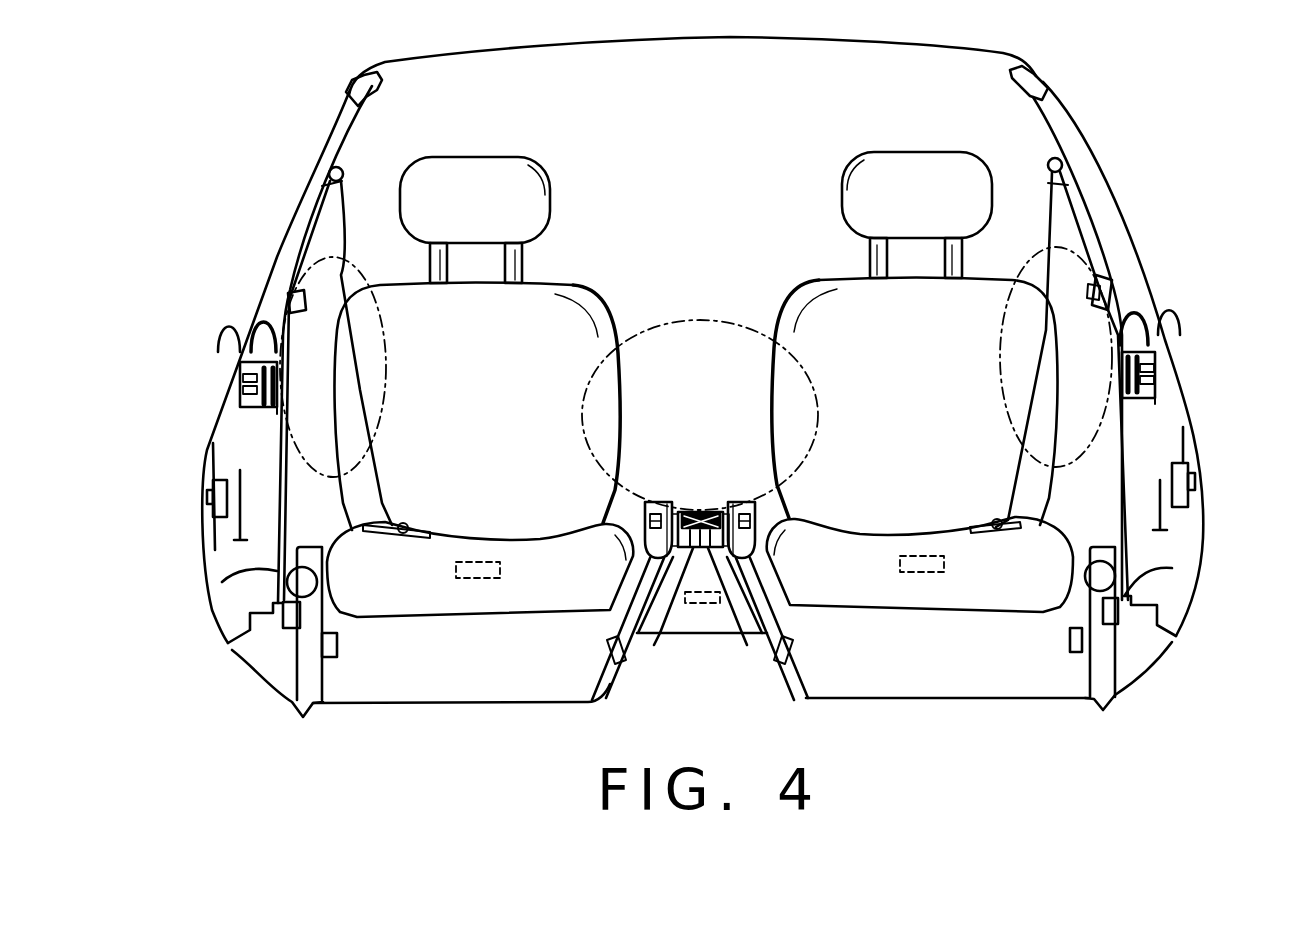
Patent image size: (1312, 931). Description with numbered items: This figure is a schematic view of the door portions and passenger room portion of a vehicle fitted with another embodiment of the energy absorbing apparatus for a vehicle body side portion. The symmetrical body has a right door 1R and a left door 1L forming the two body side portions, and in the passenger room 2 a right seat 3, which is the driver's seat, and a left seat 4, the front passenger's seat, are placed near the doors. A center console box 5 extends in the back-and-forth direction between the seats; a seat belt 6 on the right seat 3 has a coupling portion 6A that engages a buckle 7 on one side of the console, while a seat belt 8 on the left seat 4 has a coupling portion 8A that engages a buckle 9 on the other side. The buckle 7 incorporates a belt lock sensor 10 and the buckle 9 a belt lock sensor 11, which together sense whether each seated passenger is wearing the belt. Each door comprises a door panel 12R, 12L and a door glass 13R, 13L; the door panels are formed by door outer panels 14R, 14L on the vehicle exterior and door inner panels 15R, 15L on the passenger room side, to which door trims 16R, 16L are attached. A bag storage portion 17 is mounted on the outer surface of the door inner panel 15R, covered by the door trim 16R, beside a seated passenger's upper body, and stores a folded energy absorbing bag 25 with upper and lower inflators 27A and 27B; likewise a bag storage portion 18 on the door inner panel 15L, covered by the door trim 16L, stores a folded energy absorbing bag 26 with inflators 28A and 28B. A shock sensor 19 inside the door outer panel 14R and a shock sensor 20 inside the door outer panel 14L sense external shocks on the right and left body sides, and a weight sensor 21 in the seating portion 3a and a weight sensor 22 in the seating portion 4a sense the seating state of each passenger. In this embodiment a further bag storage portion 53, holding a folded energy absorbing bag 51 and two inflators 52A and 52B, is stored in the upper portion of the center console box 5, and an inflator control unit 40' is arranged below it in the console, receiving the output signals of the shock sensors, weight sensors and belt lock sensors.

The right door 1R is at (285, 192).
The left door 1L is at (1123, 200).
The passenger room 2 is at (718, 141).
The right seat 3 is at (583, 296).
The seating portion 3a is at (427, 617).
The left seat 4 is at (812, 298).
The seating portion 4a is at (910, 612).
The center console box 5 is at (725, 573).
The seat belt 6 is at (343, 218).
The coupling portion 6A is at (410, 528).
The buckle 7 is at (658, 500).
The seat belt 8 is at (1048, 190).
The coupling portion 8A is at (980, 525).
The buckle 9 is at (741, 500).
The belt lock sensor 10 is at (648, 516).
The belt lock sensor 11 is at (752, 514).
The door panel 12R is at (200, 467).
The door panel 12L is at (1205, 464).
The door glass 13R is at (323, 143).
The door glass 13L is at (1078, 146).
The door outer panel 14R is at (225, 612).
The door outer panel 14L is at (1203, 538).
The door inner panel 15R is at (222, 581).
The door inner panel 15L is at (1175, 570).
The door trim 16R is at (330, 552).
The door trim 16L is at (1080, 552).
The bag storage portion 17 is at (253, 410).
The bag storage portion 18 is at (1152, 400).
The shock sensor 19 is at (208, 500).
The shock sensor 20 is at (1190, 480).
The weight sensor 21 is at (500, 576).
The weight sensor 22 is at (945, 572).
The energy absorbing bag 25 is at (262, 365).
The energy absorbing bag 26 is at (1127, 360).
The inflator 27A is at (240, 378).
The inflator 27B is at (240, 389).
The inflator 28A is at (1154, 367).
The inflator 28B is at (1155, 380).
The inflator control unit 40' is at (704, 647).
The energy absorbing bag 51 is at (703, 510).
The inflator 52A is at (663, 610).
The inflator 52B is at (742, 610).
The bag storage portion 53 is at (748, 560).